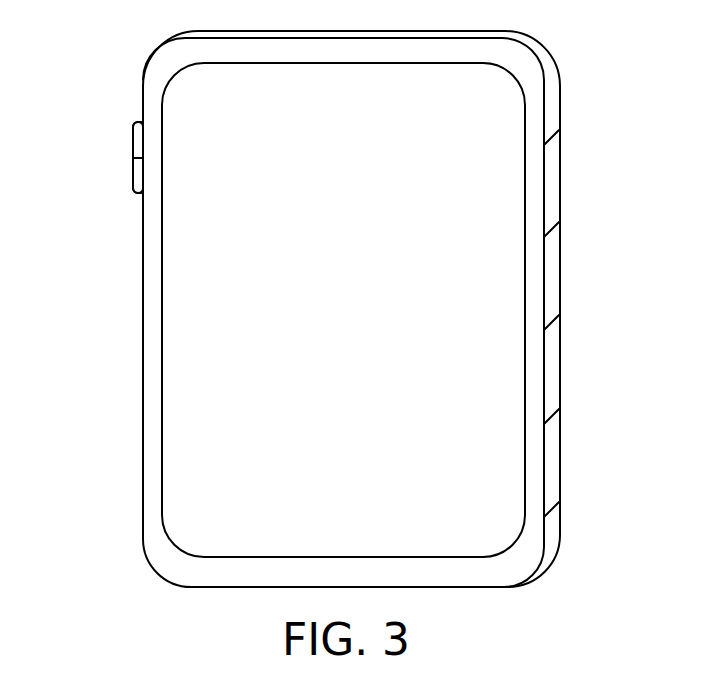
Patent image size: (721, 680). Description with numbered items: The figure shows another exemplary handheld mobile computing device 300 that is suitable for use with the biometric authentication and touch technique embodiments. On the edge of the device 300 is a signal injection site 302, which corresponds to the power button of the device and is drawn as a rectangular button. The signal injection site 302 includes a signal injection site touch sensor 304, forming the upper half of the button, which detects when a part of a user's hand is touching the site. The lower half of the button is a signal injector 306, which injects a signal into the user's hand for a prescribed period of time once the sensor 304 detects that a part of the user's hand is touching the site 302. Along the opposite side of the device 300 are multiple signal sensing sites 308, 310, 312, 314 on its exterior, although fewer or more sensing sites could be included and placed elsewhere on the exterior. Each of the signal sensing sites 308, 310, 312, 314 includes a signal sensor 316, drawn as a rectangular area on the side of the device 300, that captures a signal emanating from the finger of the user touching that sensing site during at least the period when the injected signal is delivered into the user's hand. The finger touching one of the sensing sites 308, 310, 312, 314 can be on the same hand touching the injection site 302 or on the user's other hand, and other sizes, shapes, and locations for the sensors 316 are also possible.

The handheld mobile computing device 300 is at (150, 565).
The signal injection site 302 is at (121, 114).
The signal injection site touch sensor 304 is at (138, 140).
The signal injector 306 is at (137, 182).
The signal sensing site 308 is at (587, 166).
The signal sensing site 310 is at (594, 276).
The signal sensing site 312 is at (592, 374).
The signal sensing site 314 is at (594, 471).
The signal sensor 316 is at (552, 153).